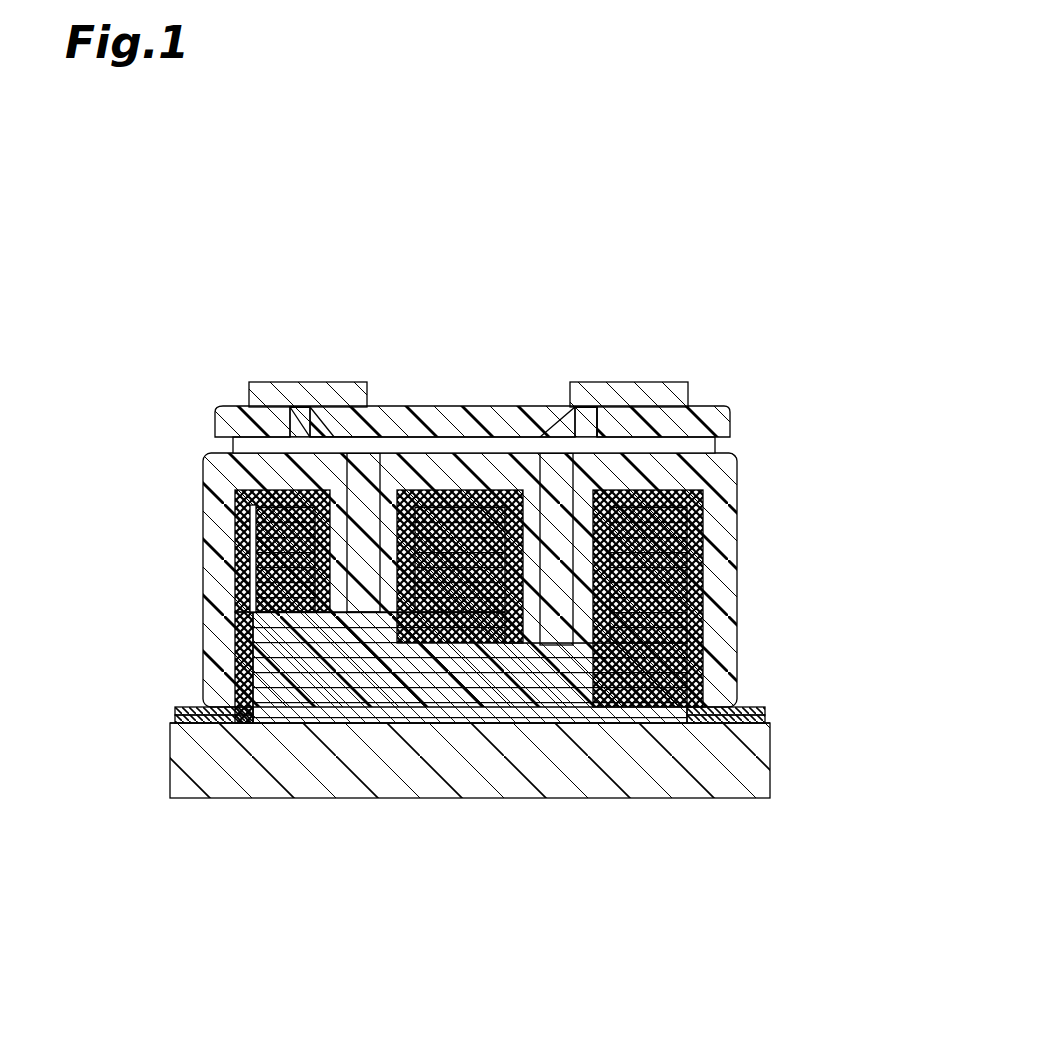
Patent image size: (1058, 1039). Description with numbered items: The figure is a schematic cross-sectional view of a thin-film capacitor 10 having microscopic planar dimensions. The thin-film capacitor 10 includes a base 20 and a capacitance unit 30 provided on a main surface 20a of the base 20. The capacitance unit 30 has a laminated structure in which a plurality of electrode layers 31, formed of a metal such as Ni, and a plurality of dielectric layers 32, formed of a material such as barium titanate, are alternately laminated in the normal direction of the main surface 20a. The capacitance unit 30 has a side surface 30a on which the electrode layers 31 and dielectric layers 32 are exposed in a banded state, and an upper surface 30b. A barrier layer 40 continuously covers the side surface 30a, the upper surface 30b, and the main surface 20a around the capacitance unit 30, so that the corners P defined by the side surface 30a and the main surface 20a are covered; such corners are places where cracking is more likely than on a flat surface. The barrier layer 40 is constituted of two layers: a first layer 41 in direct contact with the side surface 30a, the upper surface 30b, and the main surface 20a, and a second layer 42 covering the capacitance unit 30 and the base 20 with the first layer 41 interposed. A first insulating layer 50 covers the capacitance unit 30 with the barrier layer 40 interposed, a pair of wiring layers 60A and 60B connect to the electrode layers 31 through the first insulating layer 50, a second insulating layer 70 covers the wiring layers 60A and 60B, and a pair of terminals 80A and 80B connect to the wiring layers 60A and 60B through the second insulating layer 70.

The thin-film capacitor 10 is at (222, 270).
The base 20 is at (755, 777).
The main surface 20a is at (185, 706).
The capacitance unit 30 is at (489, 587).
The side surface 30a is at (238, 572).
The upper surface 30b is at (243, 497).
The electrode layer 31 is at (697, 502).
The dielectric layer 32 is at (705, 485).
The barrier layer 40 is at (556, 736).
The first layer 41 is at (768, 720).
The second layer 42 is at (768, 712).
The first insulating layer 50 is at (222, 478).
The wiring layer 60A is at (338, 440).
The wiring layer 60B is at (565, 432).
The second insulating layer 70 is at (215, 418).
The terminal 80A is at (292, 382).
The terminal 80B is at (640, 382).
The corners P is at (255, 730).